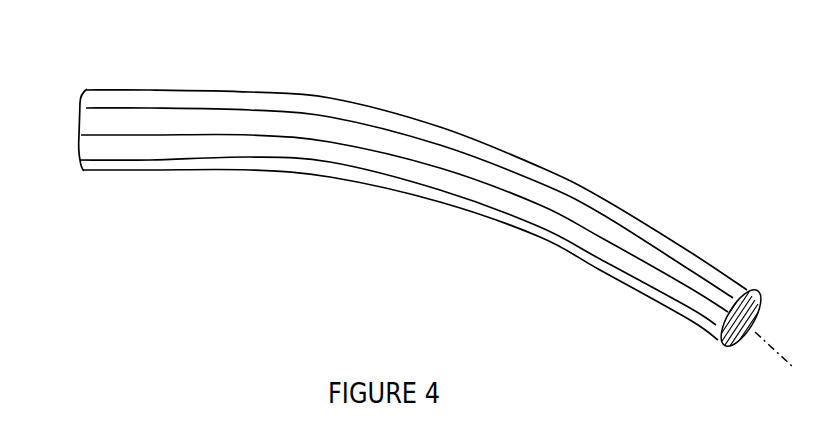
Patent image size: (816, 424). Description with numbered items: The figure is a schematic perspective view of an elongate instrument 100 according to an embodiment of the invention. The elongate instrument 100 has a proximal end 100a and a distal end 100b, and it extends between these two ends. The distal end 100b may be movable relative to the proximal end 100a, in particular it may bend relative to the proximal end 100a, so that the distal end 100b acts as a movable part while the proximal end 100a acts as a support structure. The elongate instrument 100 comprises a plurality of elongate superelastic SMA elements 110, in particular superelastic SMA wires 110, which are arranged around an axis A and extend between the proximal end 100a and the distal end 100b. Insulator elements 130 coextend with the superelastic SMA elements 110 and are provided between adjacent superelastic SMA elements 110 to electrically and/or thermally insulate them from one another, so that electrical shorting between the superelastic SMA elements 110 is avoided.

The elongate instrument 100 is at (60, 64).
The proximal end 100a is at (117, 154).
The distal end 100b is at (744, 307).
The superelastic SMA elements 110 is at (672, 249).
The insulator elements 130 is at (477, 165).
The axis A is at (772, 358).